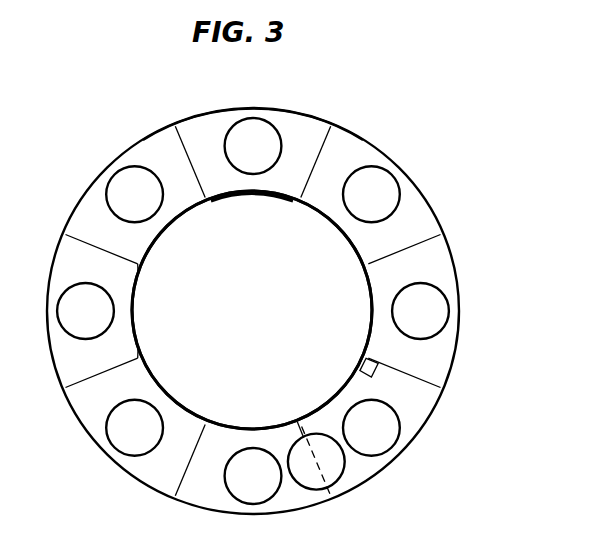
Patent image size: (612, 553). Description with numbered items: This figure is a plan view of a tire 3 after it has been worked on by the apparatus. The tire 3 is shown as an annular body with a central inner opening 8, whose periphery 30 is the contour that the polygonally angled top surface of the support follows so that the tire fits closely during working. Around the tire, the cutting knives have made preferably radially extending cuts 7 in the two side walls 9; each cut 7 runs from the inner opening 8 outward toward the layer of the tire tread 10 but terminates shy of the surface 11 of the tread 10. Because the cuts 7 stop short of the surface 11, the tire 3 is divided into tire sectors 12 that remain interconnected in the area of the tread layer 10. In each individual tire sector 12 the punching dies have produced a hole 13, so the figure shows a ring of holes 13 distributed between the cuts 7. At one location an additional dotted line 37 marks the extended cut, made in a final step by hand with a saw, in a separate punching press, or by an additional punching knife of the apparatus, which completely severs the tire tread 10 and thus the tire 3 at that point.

The tire 3 is at (436, 425).
The cuts 7 is at (135, 310).
The inner opening 8 is at (252, 310).
The side walls 9 is at (253, 311).
The tire tread 10 is at (307, 132).
The surface of the tread 11 is at (225, 107).
The tire sectors 12 is at (315, 202).
The holes 13 is at (224, 150).
The periphery 30 is at (181, 220).
The dotted lines 37 is at (430, 378).